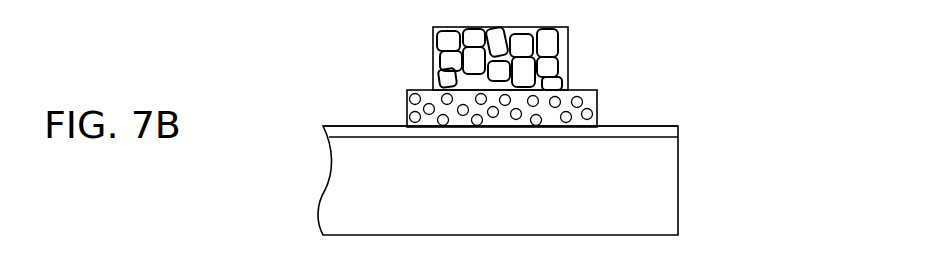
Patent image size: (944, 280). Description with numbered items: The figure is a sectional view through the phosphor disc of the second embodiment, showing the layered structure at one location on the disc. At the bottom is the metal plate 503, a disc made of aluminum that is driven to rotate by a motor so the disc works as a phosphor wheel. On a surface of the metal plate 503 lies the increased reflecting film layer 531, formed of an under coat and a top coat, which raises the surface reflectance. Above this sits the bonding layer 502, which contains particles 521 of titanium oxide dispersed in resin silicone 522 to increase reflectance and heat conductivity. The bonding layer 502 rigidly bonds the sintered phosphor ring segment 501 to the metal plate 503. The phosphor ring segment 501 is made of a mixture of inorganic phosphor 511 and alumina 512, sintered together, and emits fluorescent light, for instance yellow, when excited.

The phosphor ring segment 501 is at (494, 51).
The phosphor 511 is at (547, 43).
The alumina 512 is at (562, 73).
The bonding layer 502 is at (510, 88).
The particles 521 is at (407, 102).
The resin silicone 522 is at (415, 105).
The increased reflecting film layer 531 is at (673, 132).
The metal plate 503 is at (656, 197).